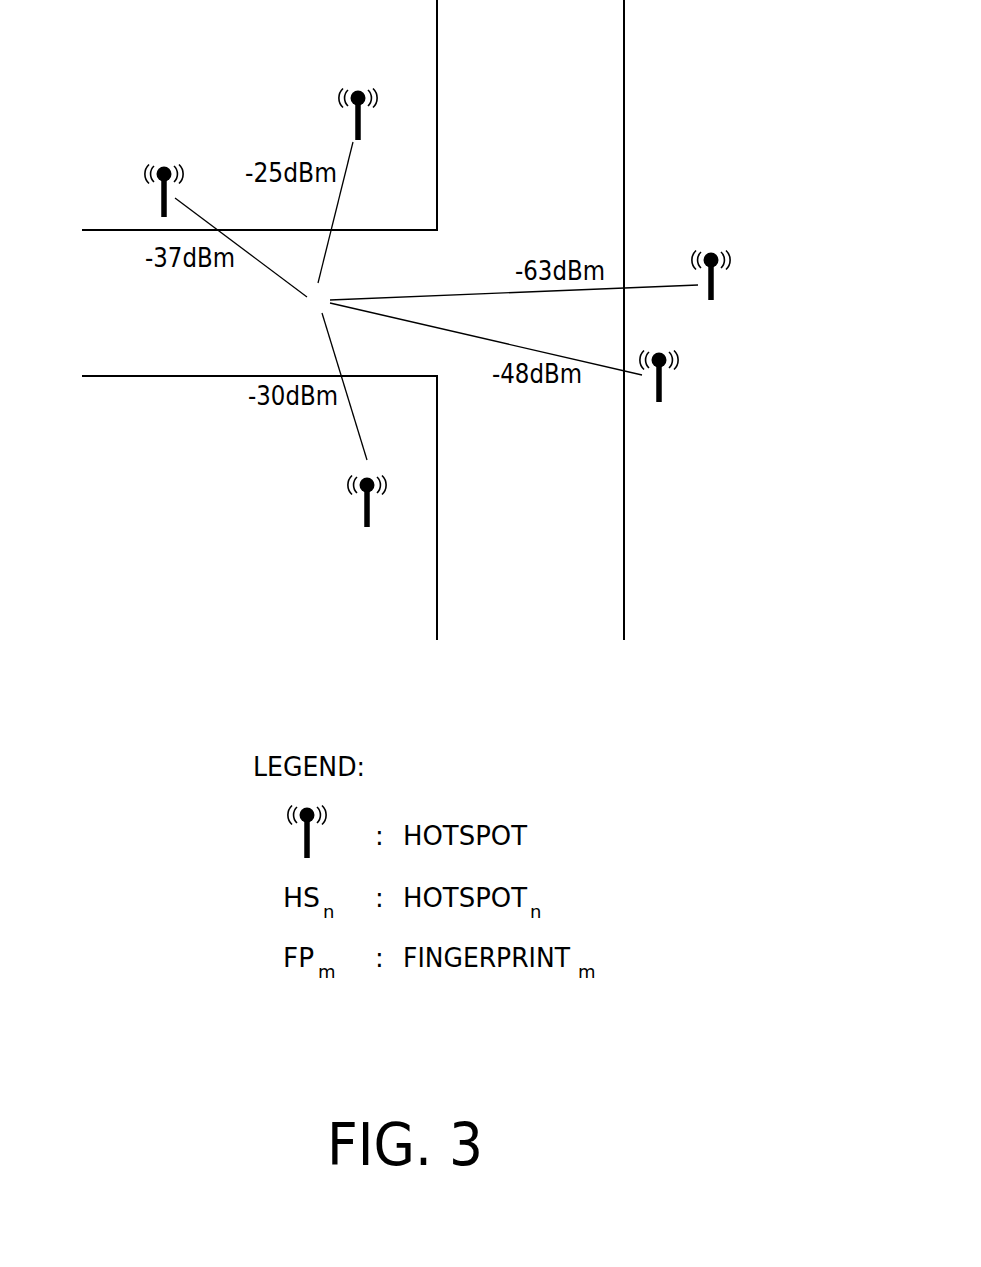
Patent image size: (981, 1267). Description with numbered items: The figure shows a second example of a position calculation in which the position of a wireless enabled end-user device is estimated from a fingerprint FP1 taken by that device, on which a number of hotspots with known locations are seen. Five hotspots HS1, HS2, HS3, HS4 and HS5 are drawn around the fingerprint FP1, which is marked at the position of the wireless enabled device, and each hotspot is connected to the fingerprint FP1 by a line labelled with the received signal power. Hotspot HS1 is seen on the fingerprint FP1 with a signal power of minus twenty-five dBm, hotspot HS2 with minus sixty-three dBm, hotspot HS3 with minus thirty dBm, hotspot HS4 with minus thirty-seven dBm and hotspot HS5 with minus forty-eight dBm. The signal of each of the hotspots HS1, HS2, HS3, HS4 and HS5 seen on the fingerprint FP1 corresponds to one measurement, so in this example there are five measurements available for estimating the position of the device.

The hotspot HS1 is at (343, 84).
The hotspot HS2 is at (741, 276).
The hotspot HS3 is at (339, 490).
The hotspot HS4 is at (150, 161).
The hotspot HS5 is at (690, 377).
The fingerprint FP1 is at (298, 316).